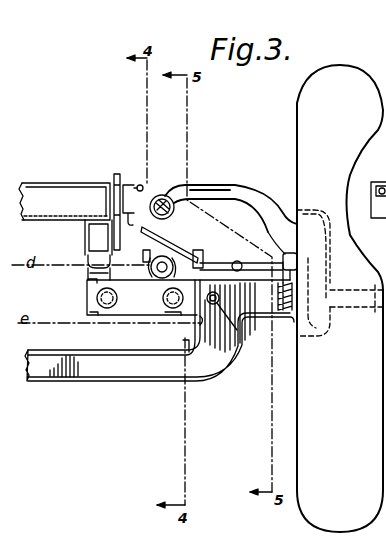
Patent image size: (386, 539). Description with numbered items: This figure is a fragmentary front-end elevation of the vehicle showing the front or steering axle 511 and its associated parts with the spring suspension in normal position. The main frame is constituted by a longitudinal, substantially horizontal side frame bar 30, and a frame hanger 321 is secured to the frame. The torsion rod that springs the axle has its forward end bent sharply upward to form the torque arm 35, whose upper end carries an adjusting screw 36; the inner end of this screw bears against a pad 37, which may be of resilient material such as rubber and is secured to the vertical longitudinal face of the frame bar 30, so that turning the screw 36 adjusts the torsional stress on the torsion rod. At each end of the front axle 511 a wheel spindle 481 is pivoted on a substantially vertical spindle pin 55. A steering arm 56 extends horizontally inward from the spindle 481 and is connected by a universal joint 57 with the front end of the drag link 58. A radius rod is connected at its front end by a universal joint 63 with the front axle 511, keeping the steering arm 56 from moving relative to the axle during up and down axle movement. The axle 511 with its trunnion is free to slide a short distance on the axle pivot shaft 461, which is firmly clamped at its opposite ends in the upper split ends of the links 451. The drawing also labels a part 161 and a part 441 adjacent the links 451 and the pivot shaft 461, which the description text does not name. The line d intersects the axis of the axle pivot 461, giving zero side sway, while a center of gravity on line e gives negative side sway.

The side frame bar 30 is at (88, 183).
The pad 37 is at (123, 183).
The adjusting screw 36 is at (143, 186).
The universal joint 57 is at (155, 197).
The steering arm 56 is at (250, 198).
The drag link 58 is at (206, 197).
The spindle pin 55 is at (285, 256).
The torque arm 35 is at (377, 193).
The frame hanger 321 is at (78, 263).
The cam 161 is at (155, 252).
The lever 441 is at (190, 245).
The axle pivot shaft 461 is at (90, 273).
The links 451 is at (150, 284).
The universal joint 63 is at (228, 338).
The wheel spindle 481 is at (297, 322).
The front axle 511 is at (48, 381).